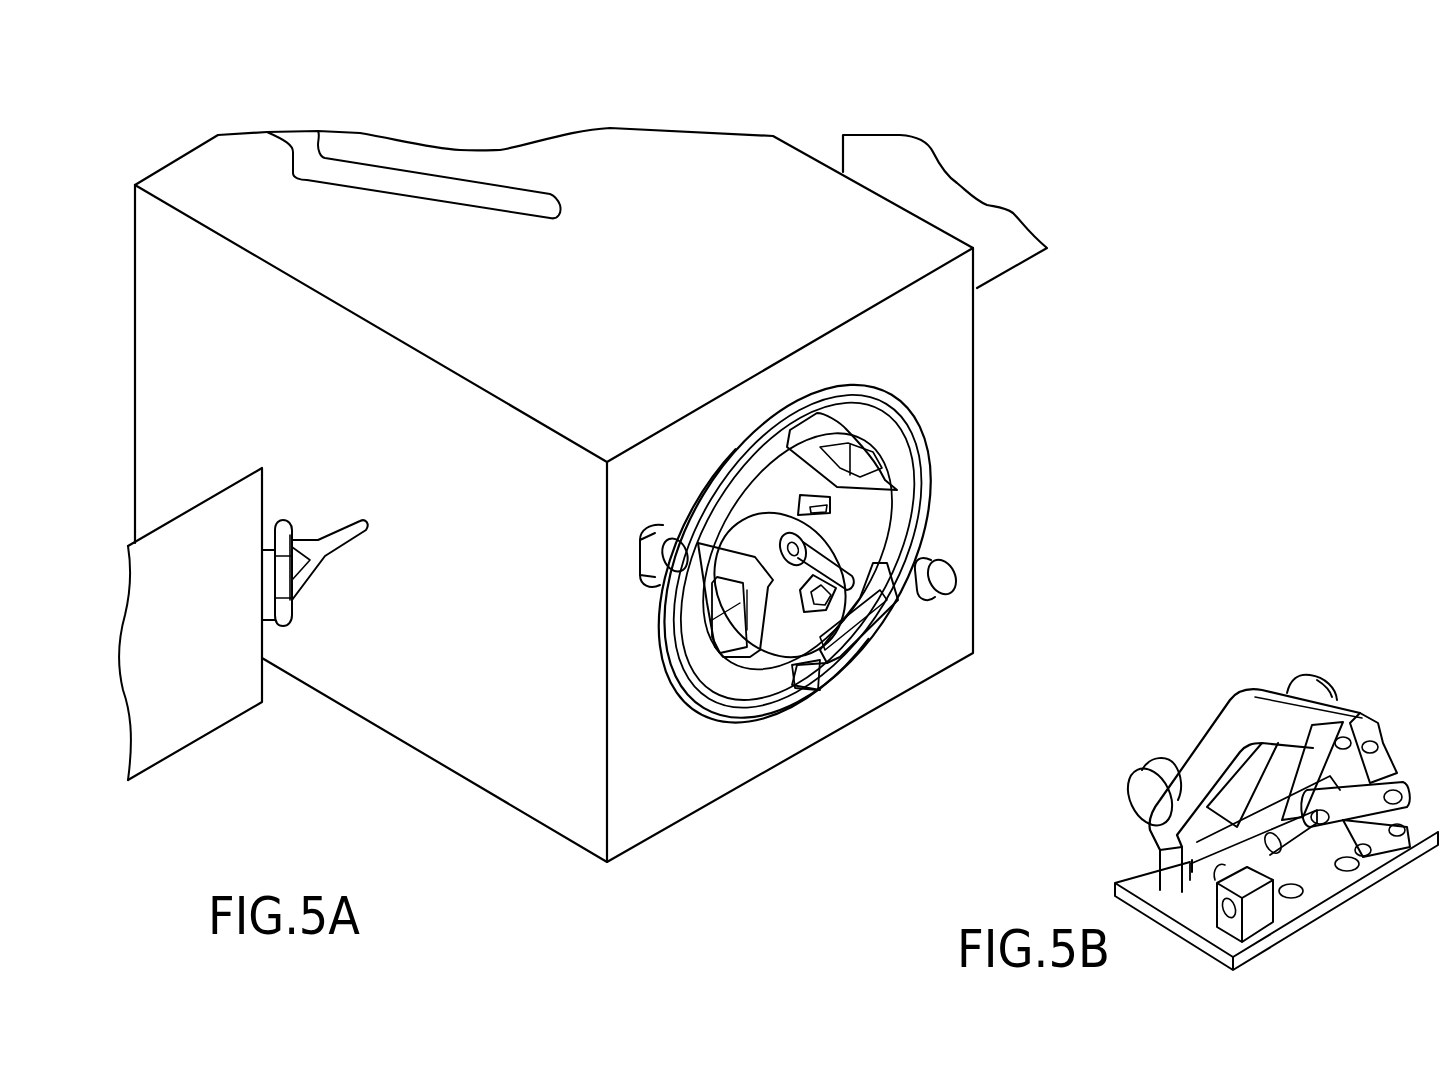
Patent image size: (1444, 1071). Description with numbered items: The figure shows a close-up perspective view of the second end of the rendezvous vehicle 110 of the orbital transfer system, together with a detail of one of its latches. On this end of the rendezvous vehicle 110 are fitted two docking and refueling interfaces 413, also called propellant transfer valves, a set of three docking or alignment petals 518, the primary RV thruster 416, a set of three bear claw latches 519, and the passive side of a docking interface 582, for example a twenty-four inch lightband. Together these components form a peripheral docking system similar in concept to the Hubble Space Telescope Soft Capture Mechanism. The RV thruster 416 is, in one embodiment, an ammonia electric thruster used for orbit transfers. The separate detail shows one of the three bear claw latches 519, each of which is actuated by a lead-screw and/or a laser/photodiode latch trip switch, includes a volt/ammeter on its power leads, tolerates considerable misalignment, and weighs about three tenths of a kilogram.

In FIG. 5A, the rendezvous vehicle 110 is at (192, 136).
In FIG. 5A, the docking and refueling interface 413 is at (663, 552).
In FIG. 5A, the RV thruster 416 is at (855, 585).
In FIG. 5A, the docking petals 518 is at (837, 490).
In FIG. 5A, the bear claw latches 519 is at (838, 508).
In FIG. 5B, the bear claw latches 519 is at (1262, 676).
In FIG. 5A, the passive side of docking interface 582 is at (802, 692).